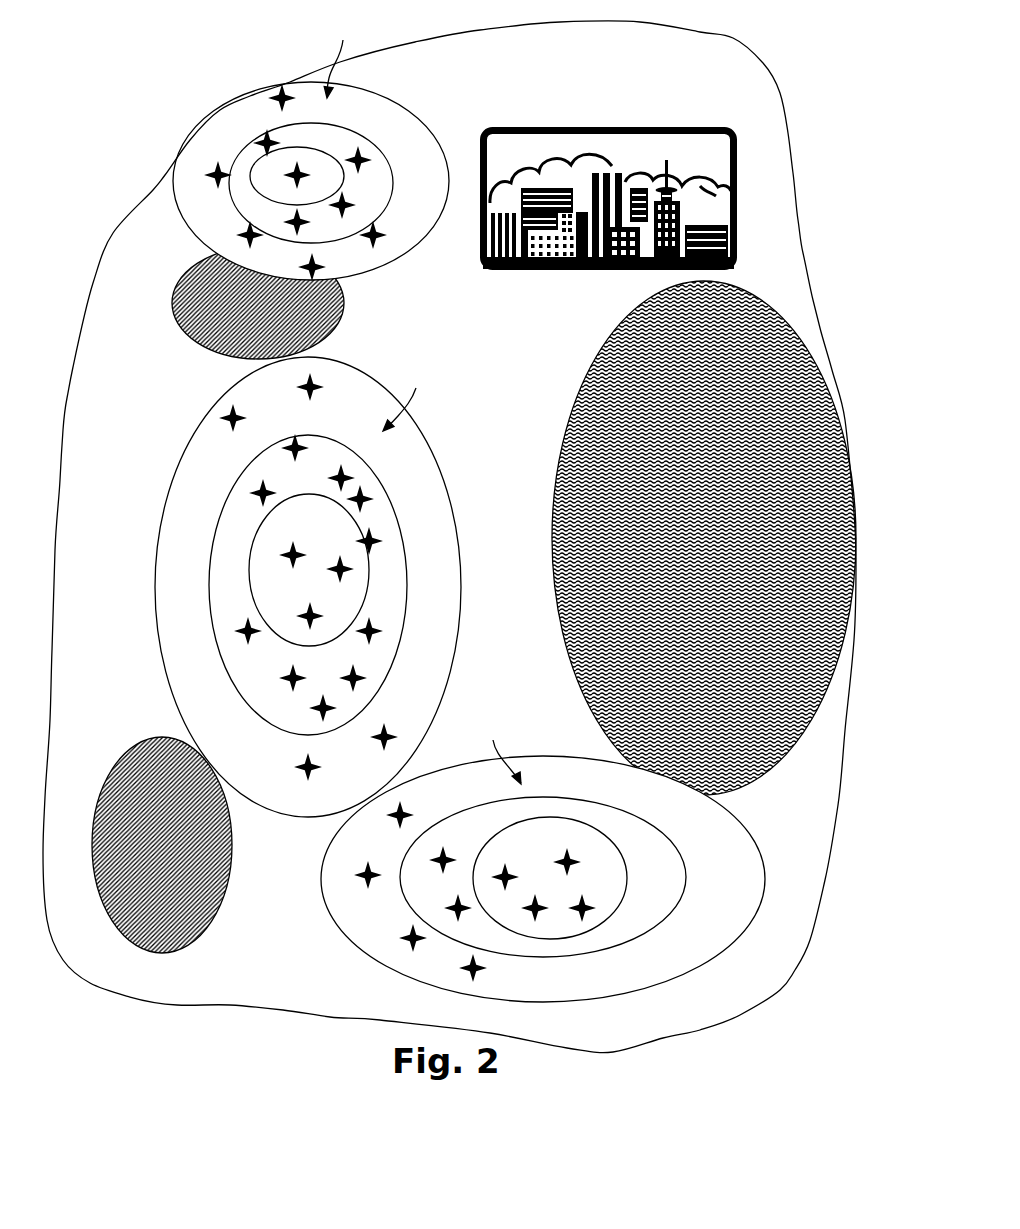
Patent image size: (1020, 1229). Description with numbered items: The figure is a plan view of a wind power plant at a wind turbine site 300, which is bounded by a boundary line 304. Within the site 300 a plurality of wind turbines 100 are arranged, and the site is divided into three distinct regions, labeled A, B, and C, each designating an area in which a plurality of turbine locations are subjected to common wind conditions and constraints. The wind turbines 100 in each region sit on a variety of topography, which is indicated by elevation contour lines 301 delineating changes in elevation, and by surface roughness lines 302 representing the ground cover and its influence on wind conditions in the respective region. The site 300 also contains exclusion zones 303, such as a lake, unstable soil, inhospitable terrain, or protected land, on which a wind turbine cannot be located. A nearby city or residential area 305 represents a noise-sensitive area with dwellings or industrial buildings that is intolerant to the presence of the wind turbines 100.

The wind turbine 100 is at (265, 143).
The wind turbine site 300 is at (753, 116).
The elevation contour line 301 is at (418, 130).
The surface roughness line 302 is at (444, 480).
The exclusion zone 303 is at (220, 342).
The boundary line 304 is at (97, 297).
The city or residential area 305 is at (737, 193).